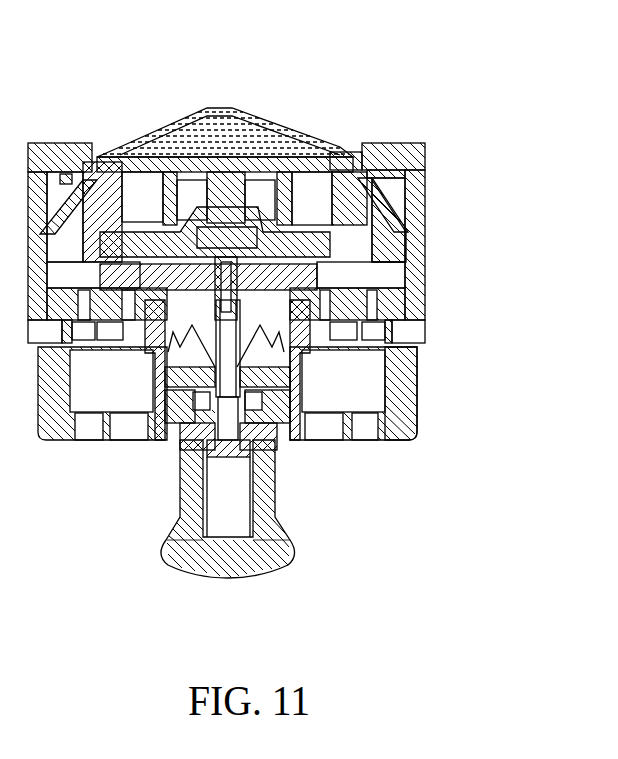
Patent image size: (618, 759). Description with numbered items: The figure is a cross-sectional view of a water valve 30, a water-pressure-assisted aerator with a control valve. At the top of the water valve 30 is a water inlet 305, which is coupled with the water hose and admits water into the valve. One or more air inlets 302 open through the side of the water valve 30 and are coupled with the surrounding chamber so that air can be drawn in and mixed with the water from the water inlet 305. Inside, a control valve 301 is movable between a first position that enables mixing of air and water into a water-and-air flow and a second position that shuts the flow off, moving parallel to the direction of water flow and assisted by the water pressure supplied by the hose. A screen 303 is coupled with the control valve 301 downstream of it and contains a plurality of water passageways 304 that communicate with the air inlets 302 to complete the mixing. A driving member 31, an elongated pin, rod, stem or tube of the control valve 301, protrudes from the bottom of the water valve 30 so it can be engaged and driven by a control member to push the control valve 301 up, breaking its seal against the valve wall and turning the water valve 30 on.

The water valve 30 is at (226, 296).
The control valve 301 is at (318, 248).
The air inlets 302 is at (415, 333).
The screen 303 is at (395, 428).
The water passageways 304 is at (322, 428).
The water inlet 305 is at (285, 133).
The driving member 31 is at (282, 553).